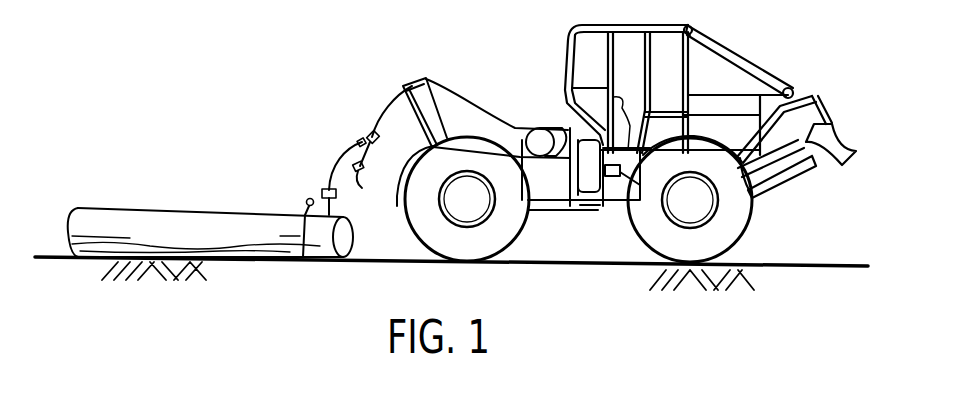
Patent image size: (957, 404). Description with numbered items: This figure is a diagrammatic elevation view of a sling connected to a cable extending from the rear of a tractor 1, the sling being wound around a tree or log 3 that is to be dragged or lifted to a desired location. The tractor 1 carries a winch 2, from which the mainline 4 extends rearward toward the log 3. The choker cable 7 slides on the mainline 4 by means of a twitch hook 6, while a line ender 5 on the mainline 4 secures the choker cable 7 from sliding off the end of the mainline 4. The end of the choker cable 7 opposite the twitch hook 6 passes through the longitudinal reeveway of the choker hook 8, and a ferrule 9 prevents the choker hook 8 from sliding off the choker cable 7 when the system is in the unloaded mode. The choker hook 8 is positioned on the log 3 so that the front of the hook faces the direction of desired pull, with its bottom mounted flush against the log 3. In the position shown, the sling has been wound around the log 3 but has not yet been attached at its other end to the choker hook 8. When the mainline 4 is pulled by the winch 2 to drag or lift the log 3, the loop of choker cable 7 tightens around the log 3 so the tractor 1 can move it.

The skidder vehicle 1 is at (570, 40).
The winch 2 is at (541, 127).
The log 3 is at (182, 210).
The mainline 4 is at (393, 112).
The line ender 5 is at (365, 184).
The twitch hook 6 is at (364, 133).
The choker cable 7 is at (344, 155).
The choker hook 8 is at (323, 190).
The ferrule 9 is at (305, 202).